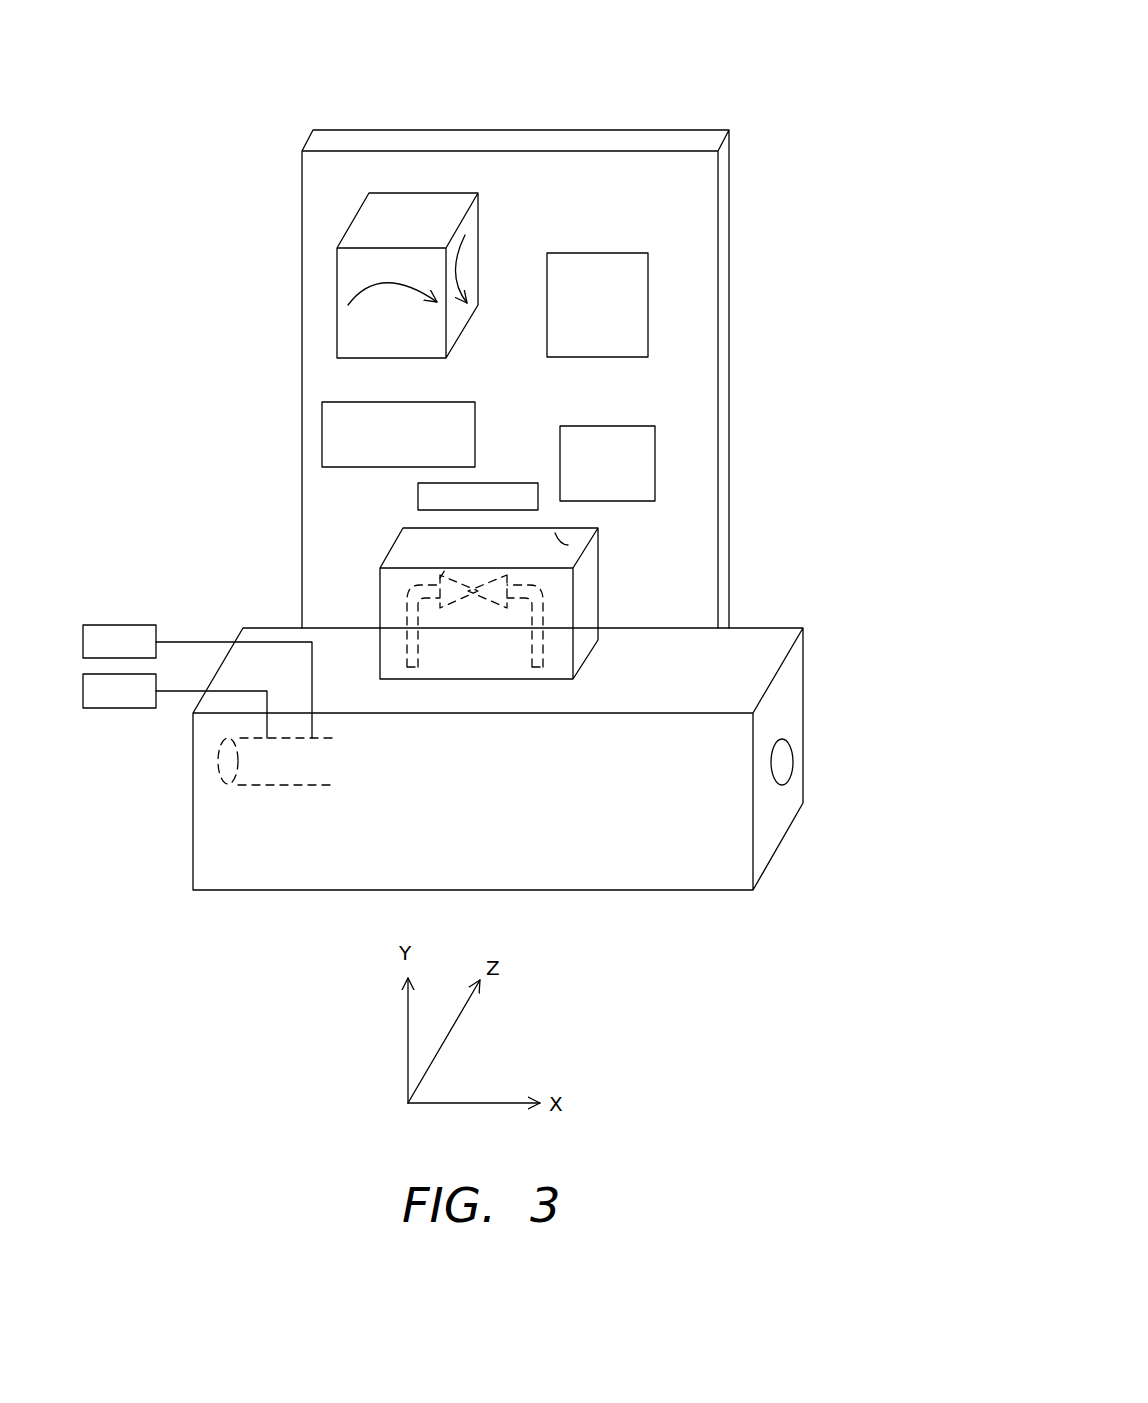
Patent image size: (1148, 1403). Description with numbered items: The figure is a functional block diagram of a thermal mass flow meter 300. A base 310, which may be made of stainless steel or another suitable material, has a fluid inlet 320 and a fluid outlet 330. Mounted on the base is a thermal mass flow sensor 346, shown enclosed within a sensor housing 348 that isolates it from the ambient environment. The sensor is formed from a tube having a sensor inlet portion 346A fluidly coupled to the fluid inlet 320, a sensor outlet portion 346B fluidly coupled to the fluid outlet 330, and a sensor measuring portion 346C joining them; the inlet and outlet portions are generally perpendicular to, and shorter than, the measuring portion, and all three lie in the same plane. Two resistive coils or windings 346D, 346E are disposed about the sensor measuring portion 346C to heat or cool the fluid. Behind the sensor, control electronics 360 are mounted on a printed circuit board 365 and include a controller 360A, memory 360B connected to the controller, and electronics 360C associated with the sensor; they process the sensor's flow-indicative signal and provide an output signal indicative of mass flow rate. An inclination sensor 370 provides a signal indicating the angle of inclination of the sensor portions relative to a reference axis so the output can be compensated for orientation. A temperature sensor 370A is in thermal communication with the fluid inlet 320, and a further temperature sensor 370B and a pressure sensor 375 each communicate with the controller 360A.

The thermal mass flow meter 300 is at (252, 95).
The printed circuit board 365 is at (685, 130).
The inclination sensor 370 is at (355, 217).
The temperature sensor 370A is at (153, 625).
The temperature sensor 370B is at (420, 497).
The pressure sensor 375 is at (147, 708).
The control electronics 360 is at (516, 348).
The controller 360A is at (637, 252).
The memory 360B is at (425, 402).
The electronics associated with the thermal mass flow sensor 360C is at (637, 425).
The thermal mass flow sensor 346 is at (600, 597).
The sensor inlet portion 346A is at (407, 620).
The sensor outlet portion 346B is at (543, 648).
The sensor measuring portion 346C is at (440, 578).
The resistive coil 346D is at (447, 575).
The resistive coil 346E is at (495, 575).
The sensor housing 348 is at (555, 533).
The base 310 is at (327, 890).
The fluid inlet 320 is at (218, 767).
The fluid outlet 330 is at (793, 742).